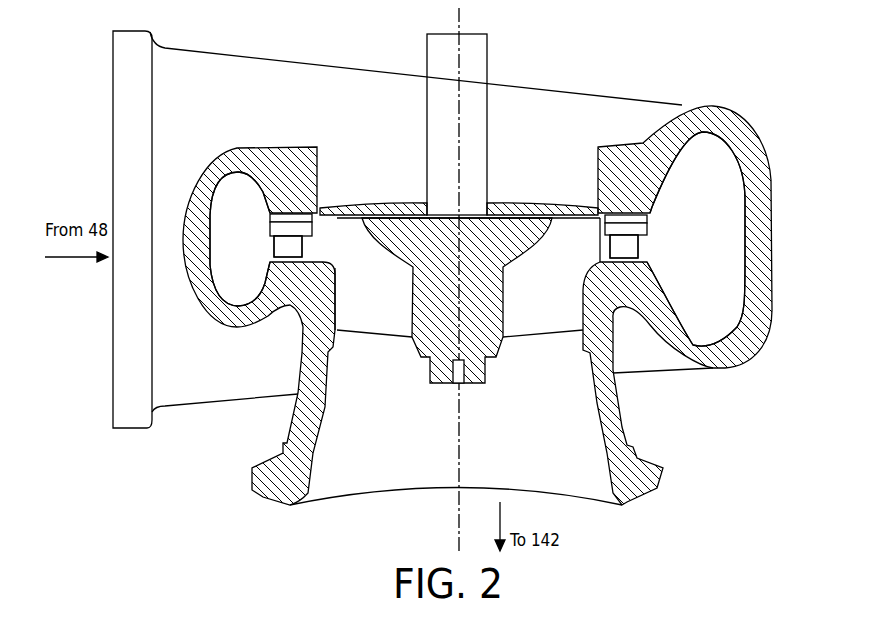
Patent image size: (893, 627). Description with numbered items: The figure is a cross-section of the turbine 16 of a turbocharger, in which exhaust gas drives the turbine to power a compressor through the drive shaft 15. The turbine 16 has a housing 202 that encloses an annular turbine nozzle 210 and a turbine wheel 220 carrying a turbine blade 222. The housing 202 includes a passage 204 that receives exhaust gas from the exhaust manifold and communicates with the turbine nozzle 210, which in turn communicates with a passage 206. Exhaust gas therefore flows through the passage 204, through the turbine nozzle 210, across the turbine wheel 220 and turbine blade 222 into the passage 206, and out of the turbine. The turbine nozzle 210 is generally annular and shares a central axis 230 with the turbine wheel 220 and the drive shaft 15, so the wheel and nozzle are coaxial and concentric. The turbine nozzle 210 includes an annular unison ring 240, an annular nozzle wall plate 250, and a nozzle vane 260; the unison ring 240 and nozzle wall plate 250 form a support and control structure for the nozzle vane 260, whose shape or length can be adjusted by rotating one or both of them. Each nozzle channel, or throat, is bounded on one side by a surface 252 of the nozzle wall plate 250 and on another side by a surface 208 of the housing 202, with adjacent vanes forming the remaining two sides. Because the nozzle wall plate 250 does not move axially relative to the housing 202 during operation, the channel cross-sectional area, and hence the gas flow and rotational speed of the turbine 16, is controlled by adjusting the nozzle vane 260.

The drive shaft 15 is at (488, 56).
The turbine 16 is at (796, 145).
The housing 202 is at (568, 91).
The passage 204 is at (250, 275).
The passage 206 is at (387, 410).
The surface of turbine housing 208 is at (304, 254).
The turbine nozzle 210 is at (269, 247).
The turbine wheel 220 is at (478, 386).
The turbine blade 222 is at (553, 290).
The central axis 230 is at (444, 280).
The unison ring 240 is at (645, 216).
The nozzle wall plate 250 is at (642, 227).
The surface of nozzle wall plate 252 is at (303, 234).
The nozzle vane 260 is at (630, 243).